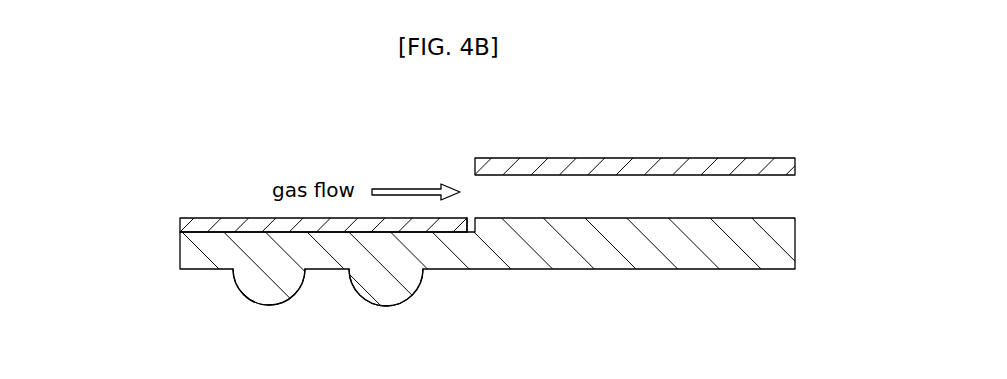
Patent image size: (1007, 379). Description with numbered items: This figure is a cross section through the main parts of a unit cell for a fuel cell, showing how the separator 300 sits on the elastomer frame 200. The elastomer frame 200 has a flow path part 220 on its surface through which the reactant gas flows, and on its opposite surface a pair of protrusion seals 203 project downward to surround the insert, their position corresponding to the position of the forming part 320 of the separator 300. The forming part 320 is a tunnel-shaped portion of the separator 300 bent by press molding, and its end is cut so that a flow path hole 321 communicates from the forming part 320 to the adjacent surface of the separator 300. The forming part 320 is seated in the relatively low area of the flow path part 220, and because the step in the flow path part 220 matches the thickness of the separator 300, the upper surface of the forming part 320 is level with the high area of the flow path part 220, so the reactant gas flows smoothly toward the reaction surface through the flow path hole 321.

The elastomer frame 200 is at (808, 243).
The flow path part 220 is at (185, 252).
The protrusion seal 203 is at (270, 292).
The separator 300 is at (808, 165).
The forming part 320 is at (180, 225).
The flow path hole 321 is at (478, 203).